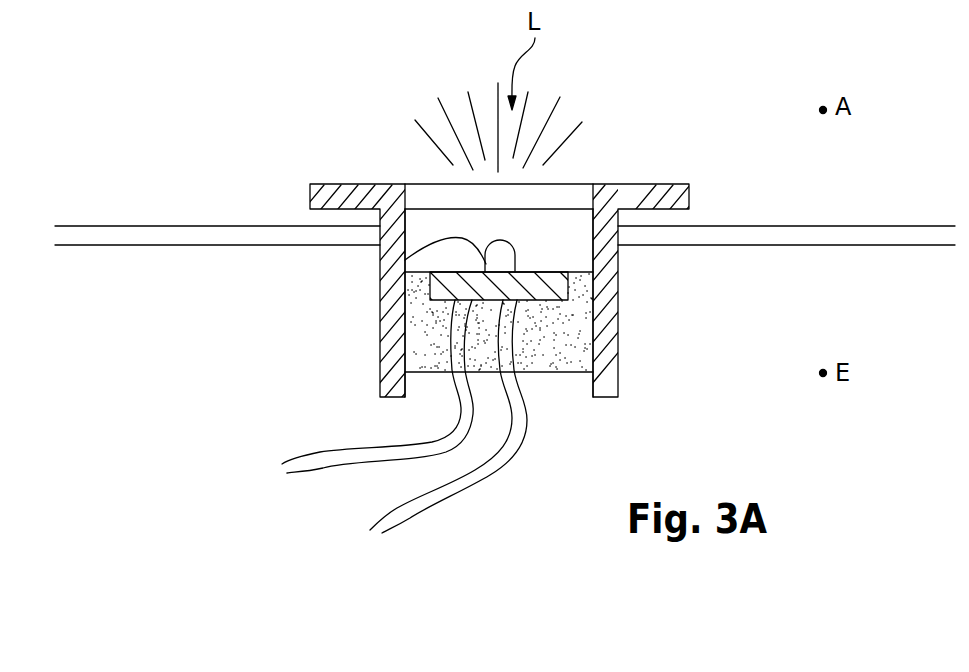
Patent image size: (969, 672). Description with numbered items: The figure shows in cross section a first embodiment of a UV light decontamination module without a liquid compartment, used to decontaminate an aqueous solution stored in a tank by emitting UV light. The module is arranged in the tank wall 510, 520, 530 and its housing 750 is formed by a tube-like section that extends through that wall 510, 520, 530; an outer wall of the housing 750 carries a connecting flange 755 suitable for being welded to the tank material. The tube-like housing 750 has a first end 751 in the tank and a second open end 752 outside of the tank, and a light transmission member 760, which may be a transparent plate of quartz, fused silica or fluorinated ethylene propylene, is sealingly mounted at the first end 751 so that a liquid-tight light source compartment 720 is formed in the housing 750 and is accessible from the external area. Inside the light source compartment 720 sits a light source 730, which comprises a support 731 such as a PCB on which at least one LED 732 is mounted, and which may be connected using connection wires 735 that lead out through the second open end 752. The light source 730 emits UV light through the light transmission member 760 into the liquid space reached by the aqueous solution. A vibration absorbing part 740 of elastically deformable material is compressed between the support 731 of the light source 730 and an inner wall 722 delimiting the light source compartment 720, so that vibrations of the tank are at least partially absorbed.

The tank wall 510 is at (500, 190).
The tank wall 520 is at (500, 190).
The tank wall 530 is at (141, 225).
The light source compartment 720 is at (567, 248).
The inner wall 722 is at (405, 320).
The light source 730 is at (532, 262).
The support 731 is at (543, 285).
The LED 732 is at (405, 260).
The connection wires 735 is at (387, 513).
The vibration absorbing part 740 is at (560, 330).
The housing 750 is at (380, 384).
The first end 751 is at (397, 197).
The second open end 752 is at (562, 410).
The connecting flange 755 is at (665, 197).
The light transmission member 760 is at (427, 195).